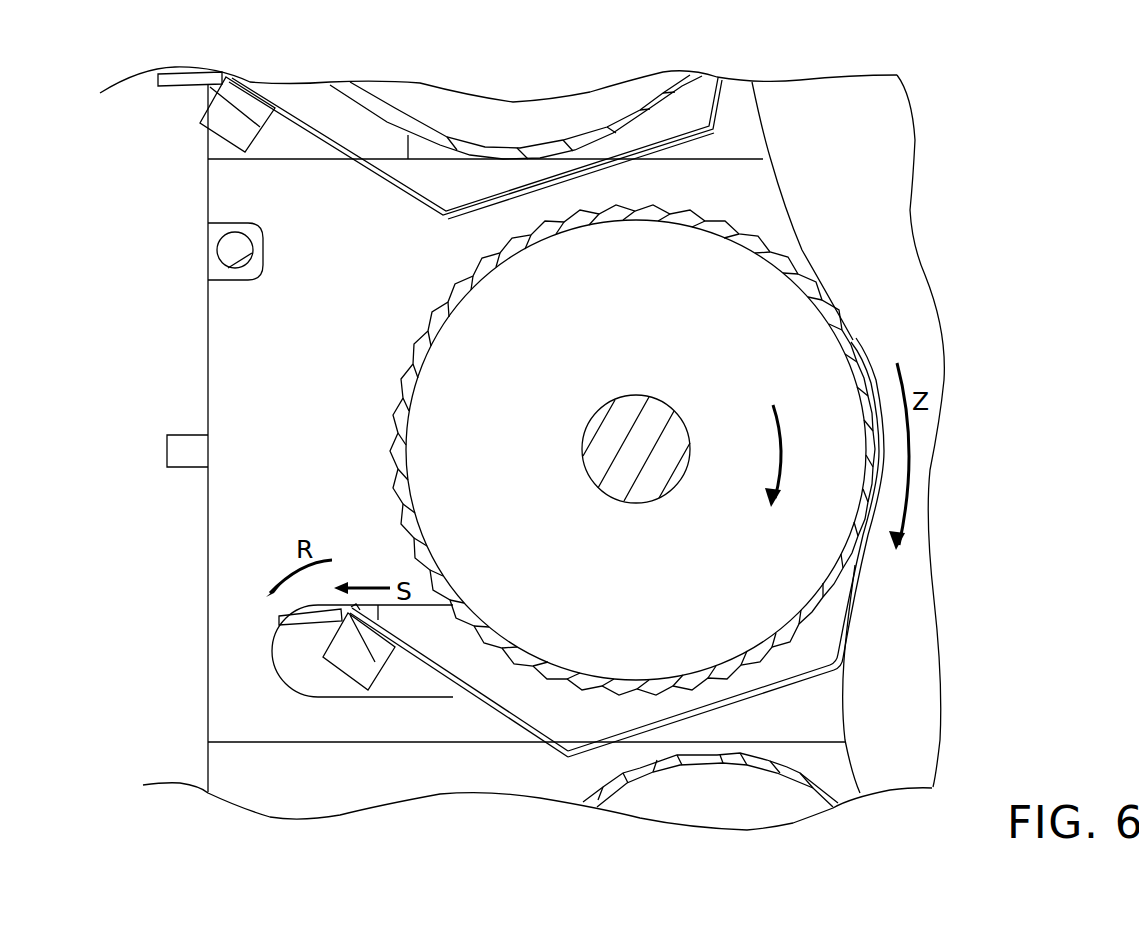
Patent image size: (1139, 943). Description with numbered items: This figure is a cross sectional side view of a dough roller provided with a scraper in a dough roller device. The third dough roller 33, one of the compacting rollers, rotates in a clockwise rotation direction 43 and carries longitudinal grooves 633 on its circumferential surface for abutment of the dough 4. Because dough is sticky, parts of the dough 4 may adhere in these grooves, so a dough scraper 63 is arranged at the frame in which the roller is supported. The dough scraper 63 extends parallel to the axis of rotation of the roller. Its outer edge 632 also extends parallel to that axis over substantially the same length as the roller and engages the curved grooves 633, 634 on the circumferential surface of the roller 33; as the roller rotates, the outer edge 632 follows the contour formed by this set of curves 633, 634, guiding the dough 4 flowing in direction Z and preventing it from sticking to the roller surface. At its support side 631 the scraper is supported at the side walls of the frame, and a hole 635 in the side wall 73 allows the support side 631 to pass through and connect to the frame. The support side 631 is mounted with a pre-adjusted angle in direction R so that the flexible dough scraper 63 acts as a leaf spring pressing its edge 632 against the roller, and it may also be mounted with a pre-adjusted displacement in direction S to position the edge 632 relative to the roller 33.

The side wall 73 is at (228, 307).
The third dough roller 33 is at (489, 311).
The clockwise rotation direction 43 is at (797, 456).
The dough 4 is at (933, 422).
The outer edge 632 is at (847, 620).
The curved groove 634 is at (800, 627).
The longitudinal groove 633 is at (787, 647).
The dough scraper 63 is at (332, 664).
The support side 631 is at (348, 660).
The hole 635 is at (295, 635).